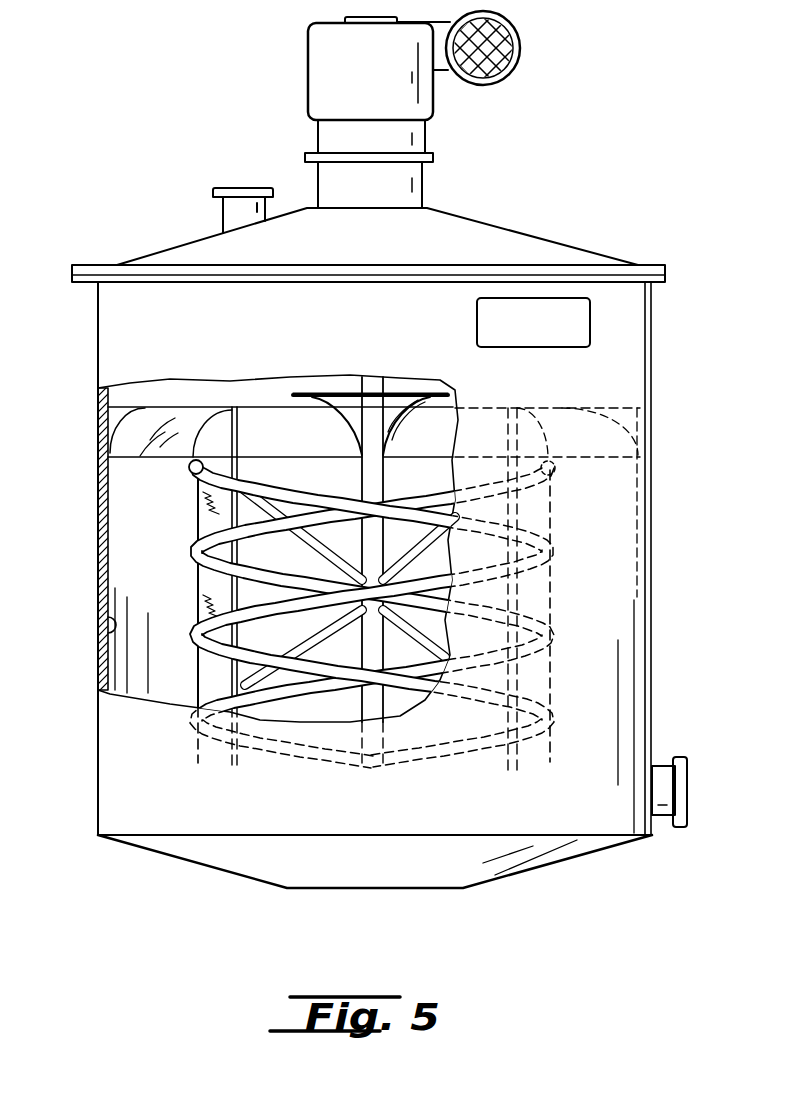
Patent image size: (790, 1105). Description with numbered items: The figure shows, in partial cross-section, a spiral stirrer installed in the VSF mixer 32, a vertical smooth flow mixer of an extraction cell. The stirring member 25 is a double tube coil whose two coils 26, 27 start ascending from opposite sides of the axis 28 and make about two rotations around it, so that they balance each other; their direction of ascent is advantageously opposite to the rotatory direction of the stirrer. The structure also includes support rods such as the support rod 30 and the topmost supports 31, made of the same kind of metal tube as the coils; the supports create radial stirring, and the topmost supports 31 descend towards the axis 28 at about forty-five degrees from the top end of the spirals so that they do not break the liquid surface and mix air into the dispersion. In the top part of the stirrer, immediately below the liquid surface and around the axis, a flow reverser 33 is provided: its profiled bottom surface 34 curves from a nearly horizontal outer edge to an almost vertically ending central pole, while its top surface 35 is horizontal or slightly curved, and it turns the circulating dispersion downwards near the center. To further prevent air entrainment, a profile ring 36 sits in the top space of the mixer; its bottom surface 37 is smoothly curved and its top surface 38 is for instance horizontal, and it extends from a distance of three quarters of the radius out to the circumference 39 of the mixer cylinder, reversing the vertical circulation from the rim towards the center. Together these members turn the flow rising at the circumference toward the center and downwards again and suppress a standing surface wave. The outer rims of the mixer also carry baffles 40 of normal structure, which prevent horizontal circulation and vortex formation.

The stirring member 25 is at (184, 548).
The coil 26 is at (548, 563).
The coil 27 is at (222, 567).
The axis 28 is at (383, 475).
The support rod 30 is at (316, 640).
The topmost support 31 is at (265, 494).
The VSF mixer 32 is at (656, 458).
The flow reverser 33 is at (350, 401).
The profiled bottom surface 34 is at (336, 415).
The top surface 35 is at (399, 389).
The profile ring 36 is at (106, 418).
The bottom surface 37 is at (138, 428).
The top surface 38 is at (129, 404).
The circumference 39 is at (100, 643).
The baffles 40 is at (213, 432).